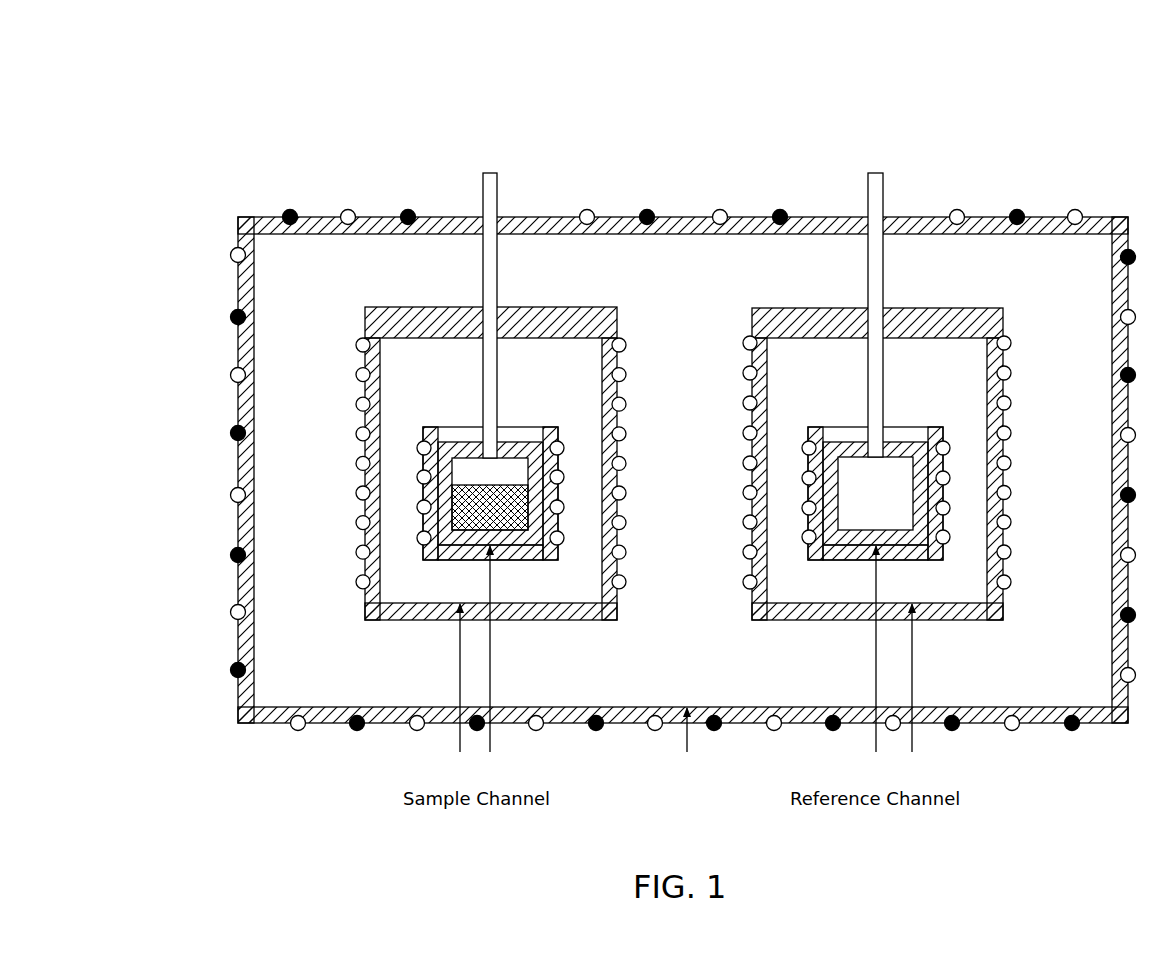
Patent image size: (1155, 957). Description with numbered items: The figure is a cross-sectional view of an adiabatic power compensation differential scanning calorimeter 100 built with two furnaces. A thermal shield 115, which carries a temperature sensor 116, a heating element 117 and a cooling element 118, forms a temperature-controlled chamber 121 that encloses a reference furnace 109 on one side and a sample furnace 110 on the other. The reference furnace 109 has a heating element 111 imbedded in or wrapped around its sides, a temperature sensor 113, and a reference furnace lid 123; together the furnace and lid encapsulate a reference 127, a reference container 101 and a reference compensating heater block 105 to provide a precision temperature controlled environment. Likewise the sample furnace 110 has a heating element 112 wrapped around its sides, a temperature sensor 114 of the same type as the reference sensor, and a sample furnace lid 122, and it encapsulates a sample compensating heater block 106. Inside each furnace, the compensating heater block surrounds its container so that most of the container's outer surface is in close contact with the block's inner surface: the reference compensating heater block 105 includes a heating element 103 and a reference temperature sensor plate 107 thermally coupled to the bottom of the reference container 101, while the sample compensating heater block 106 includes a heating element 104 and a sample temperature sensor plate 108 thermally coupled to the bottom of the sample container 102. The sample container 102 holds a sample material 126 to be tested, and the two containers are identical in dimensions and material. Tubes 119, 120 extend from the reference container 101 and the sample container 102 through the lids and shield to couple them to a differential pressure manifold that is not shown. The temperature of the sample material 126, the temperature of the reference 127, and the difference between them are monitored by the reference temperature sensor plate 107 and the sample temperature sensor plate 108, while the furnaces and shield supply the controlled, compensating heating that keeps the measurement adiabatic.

The adiabatic power compensation differential scanning calorimeter 100 is at (680, 100).
The reference container 101 is at (817, 538).
The sample container 102 is at (562, 543).
The heating element 103 is at (930, 470).
The heating element 104 is at (423, 477).
The reference compensating heater block 105 is at (808, 428).
The sample compensating heater block 106 is at (563, 432).
The reference temperature sensor plate 107 is at (880, 560).
The sample temperature sensor plate 108 is at (483, 565).
The reference furnace 109 is at (1008, 388).
The sample furnace 110 is at (358, 388).
The heating element 111 is at (750, 590).
The heating element 112 is at (362, 590).
The temperature sensor 113 is at (915, 628).
The temperature sensor 114 is at (460, 648).
The thermal shield 115 is at (740, 713).
The temperature sensor 116 is at (687, 705).
The heating element 117 is at (1075, 212).
The cooling element 118 is at (780, 212).
The tube 119 is at (868, 280).
The tube 120 is at (483, 280).
The temperature-controlled chamber 121 is at (295, 297).
The sample furnace lid 122 is at (540, 307).
The reference furnace lid 123 is at (945, 308).
The sample material 126 is at (475, 503).
The reference 127 is at (863, 487).